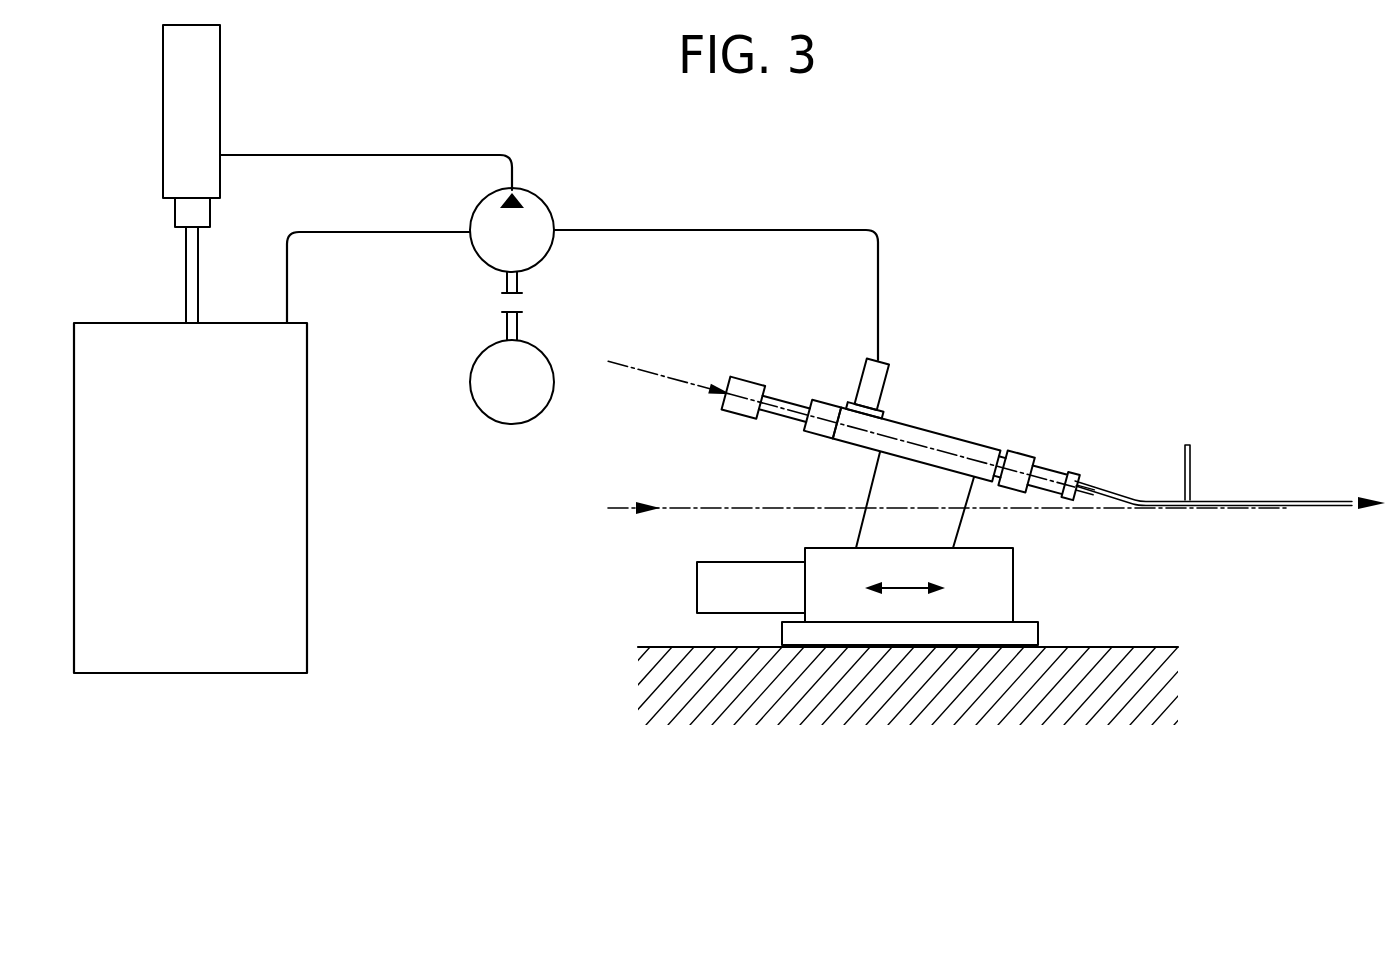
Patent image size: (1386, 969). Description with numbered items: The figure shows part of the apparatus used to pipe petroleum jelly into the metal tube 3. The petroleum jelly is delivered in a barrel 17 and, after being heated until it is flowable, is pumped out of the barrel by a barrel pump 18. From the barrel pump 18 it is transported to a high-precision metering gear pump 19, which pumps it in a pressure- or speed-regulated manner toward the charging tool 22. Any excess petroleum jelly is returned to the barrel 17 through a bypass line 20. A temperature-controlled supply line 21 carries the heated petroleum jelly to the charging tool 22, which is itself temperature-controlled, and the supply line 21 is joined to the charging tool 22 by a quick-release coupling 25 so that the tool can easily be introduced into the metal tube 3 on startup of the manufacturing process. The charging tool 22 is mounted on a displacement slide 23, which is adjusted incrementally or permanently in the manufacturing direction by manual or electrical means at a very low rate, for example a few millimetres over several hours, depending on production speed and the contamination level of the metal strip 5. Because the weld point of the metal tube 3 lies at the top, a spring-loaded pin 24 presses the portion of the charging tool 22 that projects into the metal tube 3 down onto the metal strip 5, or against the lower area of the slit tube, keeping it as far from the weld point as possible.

The metal tube 3 is at (1313, 497).
The metal strip 5 is at (1033, 512).
The barrel 17 is at (295, 588).
The barrel pump 18 is at (217, 72).
The metering gear pump 19 is at (537, 212).
The bypass line 20 is at (358, 232).
The supply line 21 is at (713, 228).
The charging tool 22 is at (958, 396).
The displacement slide 23 is at (1004, 593).
The spring-loaded pin 24 is at (1192, 463).
The quick-release coupling 25 is at (882, 370).